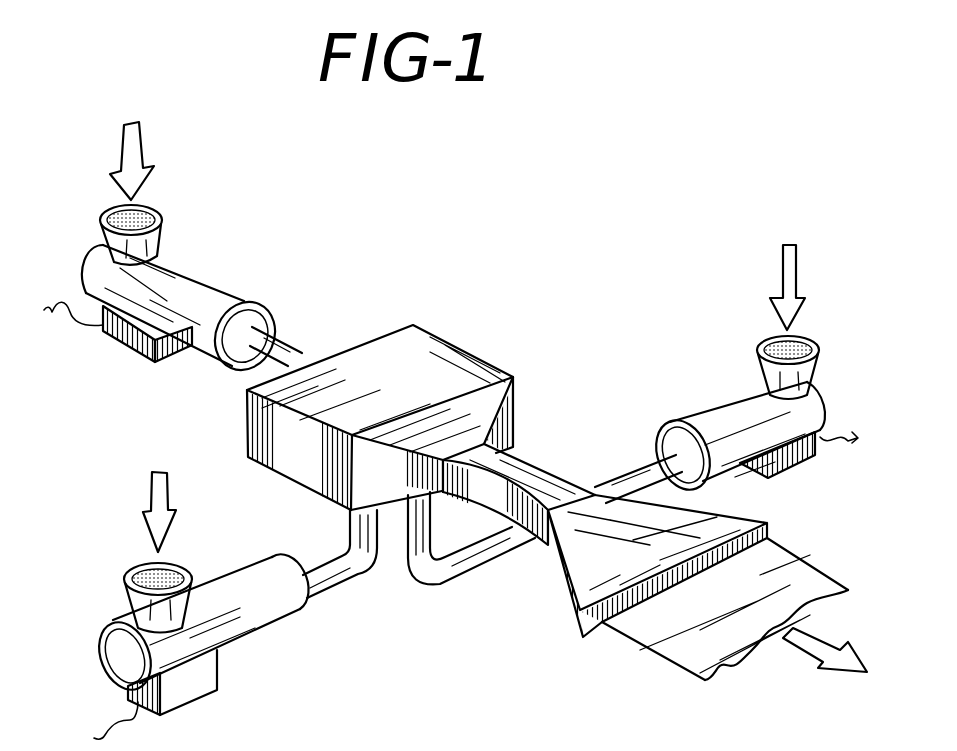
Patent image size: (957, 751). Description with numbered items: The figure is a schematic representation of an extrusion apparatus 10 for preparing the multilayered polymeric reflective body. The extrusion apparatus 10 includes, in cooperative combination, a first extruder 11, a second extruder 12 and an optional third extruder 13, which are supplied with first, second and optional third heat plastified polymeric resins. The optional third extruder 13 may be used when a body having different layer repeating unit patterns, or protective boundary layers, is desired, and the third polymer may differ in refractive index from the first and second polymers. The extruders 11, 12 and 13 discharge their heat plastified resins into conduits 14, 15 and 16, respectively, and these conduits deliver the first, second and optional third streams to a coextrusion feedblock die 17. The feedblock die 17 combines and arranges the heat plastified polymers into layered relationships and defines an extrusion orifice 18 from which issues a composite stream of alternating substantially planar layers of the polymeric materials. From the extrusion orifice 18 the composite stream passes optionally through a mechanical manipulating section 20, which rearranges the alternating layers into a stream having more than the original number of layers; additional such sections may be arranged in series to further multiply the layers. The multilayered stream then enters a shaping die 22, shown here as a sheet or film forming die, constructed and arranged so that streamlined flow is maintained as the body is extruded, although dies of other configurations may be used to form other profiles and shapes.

The extrusion apparatus 10 is at (448, 242).
The first extruder 11 is at (198, 266).
The second extruder 12 is at (238, 563).
The third extruder 13 is at (722, 397).
The conduit 14 is at (293, 342).
The conduit 15 is at (337, 584).
The conduit 16 is at (503, 546).
The coextrusion feedblock die 17 is at (440, 340).
The extrusion orifice 18 is at (484, 458).
The mechanical manipulating section 20 is at (553, 476).
The shaping die 22 is at (575, 612).